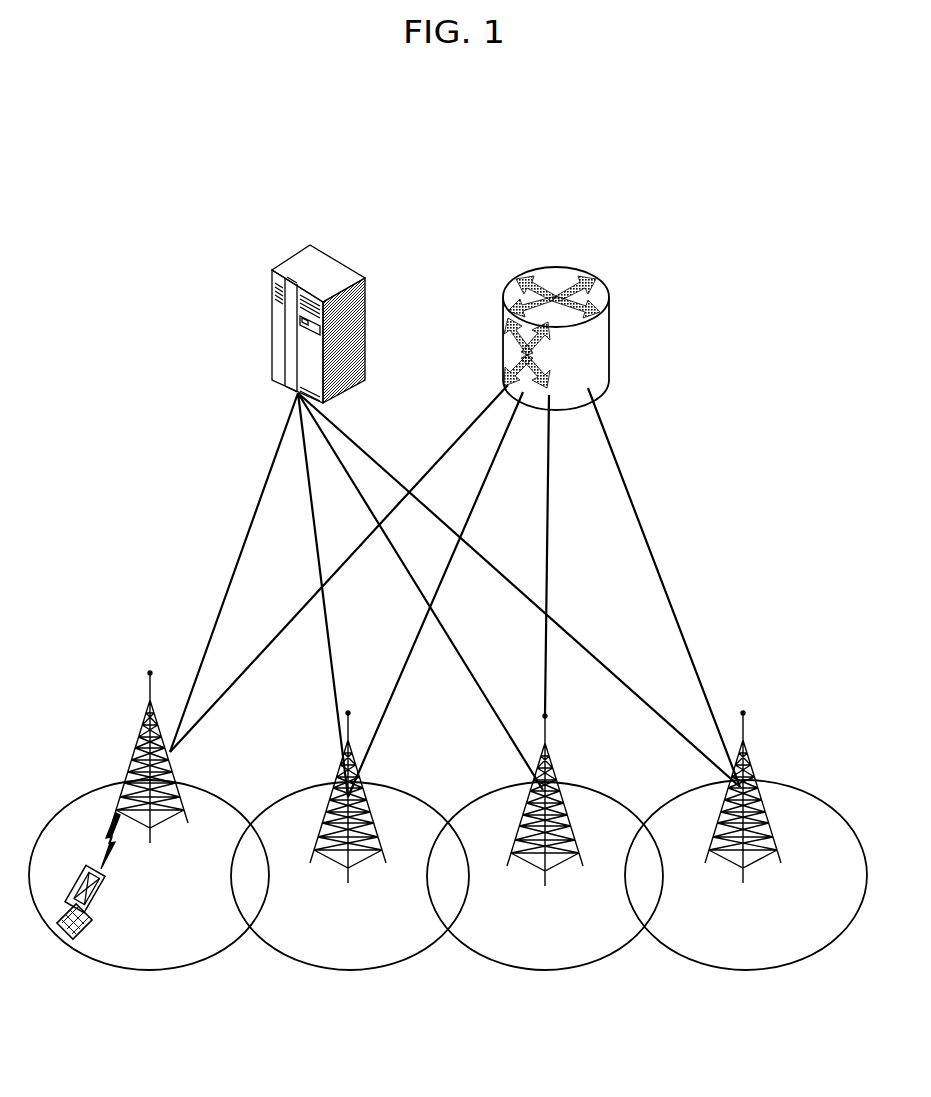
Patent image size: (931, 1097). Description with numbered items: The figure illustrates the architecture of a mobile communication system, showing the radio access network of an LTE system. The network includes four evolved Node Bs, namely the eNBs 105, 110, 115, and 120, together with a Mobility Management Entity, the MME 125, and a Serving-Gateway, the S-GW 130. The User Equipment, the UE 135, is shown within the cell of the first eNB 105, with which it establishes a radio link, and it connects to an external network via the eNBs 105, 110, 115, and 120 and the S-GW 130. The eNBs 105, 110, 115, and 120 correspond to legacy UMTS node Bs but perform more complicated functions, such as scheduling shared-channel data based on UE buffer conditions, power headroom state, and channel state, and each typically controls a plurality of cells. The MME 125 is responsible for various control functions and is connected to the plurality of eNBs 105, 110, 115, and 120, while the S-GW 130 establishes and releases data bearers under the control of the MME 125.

The evolved Node B (eNB) 105 is at (138, 732).
The evolved Node B (eNB) 110 is at (342, 762).
The evolved Node B (eNB) 115 is at (555, 760).
The evolved Node B (eNB) 120 is at (752, 760).
The Mobility Management Entity (MME) 125 is at (302, 267).
The Serving-Gateway (S-GW) 130 is at (553, 272).
The User Equipment (UE) 135 is at (97, 898).